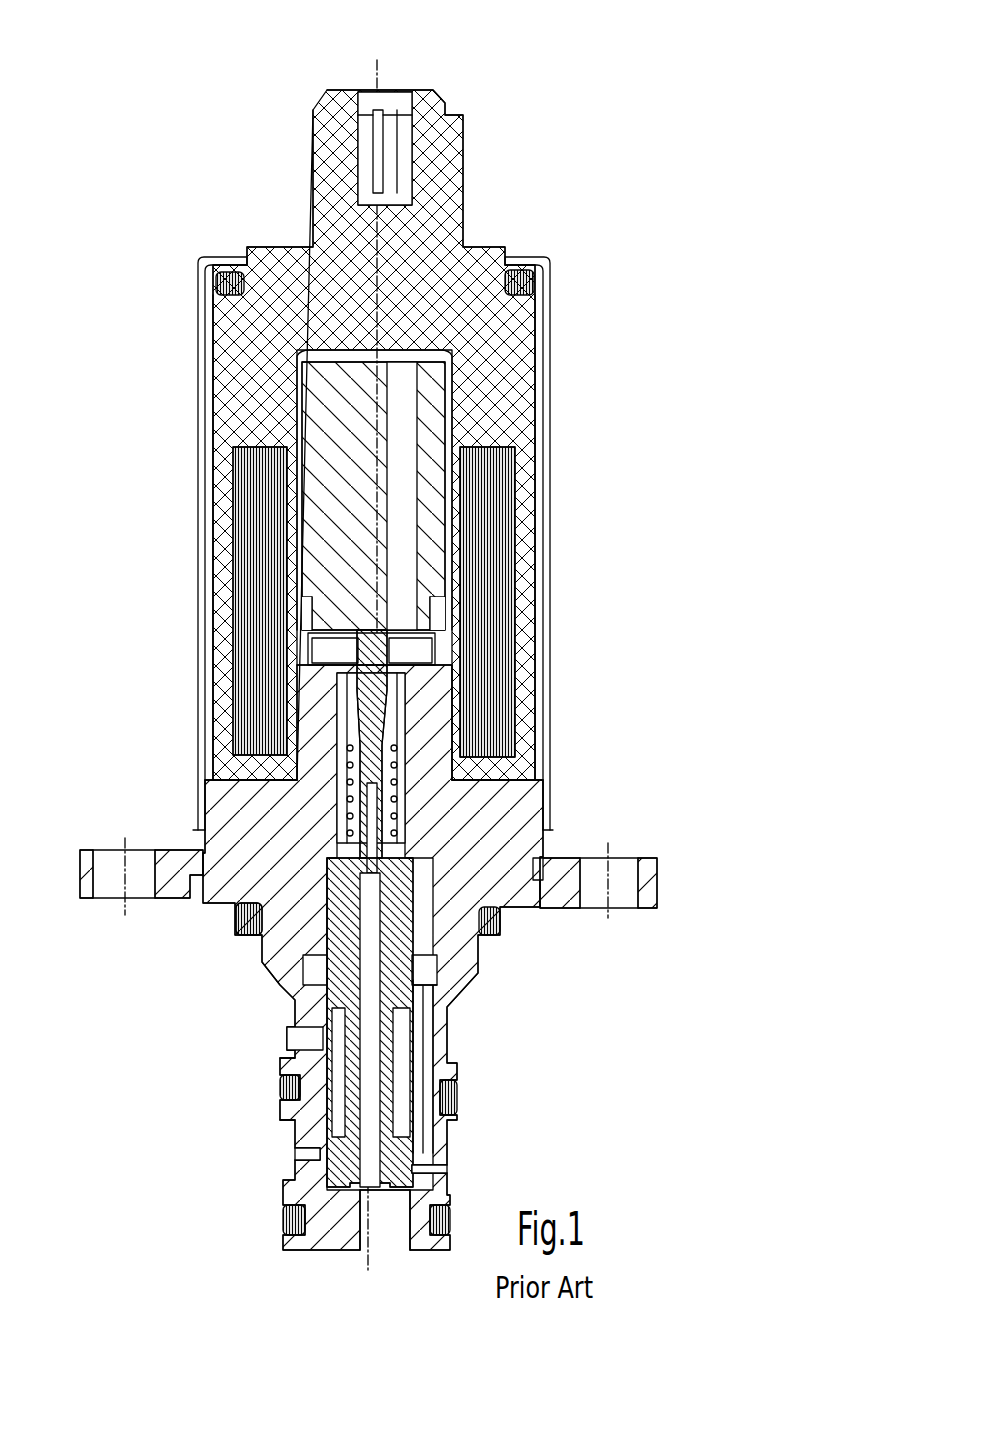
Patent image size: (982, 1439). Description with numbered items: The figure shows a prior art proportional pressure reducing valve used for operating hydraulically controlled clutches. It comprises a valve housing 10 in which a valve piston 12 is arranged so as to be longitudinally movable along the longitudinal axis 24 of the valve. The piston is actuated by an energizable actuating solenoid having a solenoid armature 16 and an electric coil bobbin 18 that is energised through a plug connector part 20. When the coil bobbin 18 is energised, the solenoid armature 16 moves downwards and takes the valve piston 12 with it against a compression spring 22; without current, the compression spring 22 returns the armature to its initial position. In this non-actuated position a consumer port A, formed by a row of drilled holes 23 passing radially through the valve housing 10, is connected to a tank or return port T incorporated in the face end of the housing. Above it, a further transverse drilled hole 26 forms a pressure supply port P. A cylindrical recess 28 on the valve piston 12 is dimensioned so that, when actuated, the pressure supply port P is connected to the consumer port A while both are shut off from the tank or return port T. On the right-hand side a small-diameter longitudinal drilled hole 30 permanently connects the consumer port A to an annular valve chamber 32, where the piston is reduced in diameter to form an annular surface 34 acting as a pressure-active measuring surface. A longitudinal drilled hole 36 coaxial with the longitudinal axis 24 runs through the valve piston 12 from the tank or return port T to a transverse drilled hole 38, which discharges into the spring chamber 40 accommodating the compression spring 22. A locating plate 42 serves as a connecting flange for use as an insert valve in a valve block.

The valve housing 10 is at (470, 845).
The valve piston 12 is at (415, 900).
The solenoid armature 16 is at (432, 430).
The electric coil bobbin 18 is at (547, 572).
The plug connector part 20 is at (432, 100).
The compression spring 22 is at (545, 688).
The row of drilled holes 23 is at (293, 1153).
The longitudinal axis 24 is at (383, 62).
The transverse drilled hole 26 is at (293, 1040).
The cylindrical recess 28 is at (330, 1097).
The longitudinal drilled hole 30 is at (430, 1042).
The annular valve chamber 32 is at (430, 978).
The annular surface 34 is at (400, 948).
The longitudinal drilled hole 36 is at (355, 935).
The transverse drilled hole 38 is at (545, 737).
The spring chamber 40 is at (545, 620).
The locating plate 42 is at (657, 880).
The pressure supply port P is at (287, 1048).
The consumer port A is at (415, 1165).
The tank or return port T is at (393, 1228).